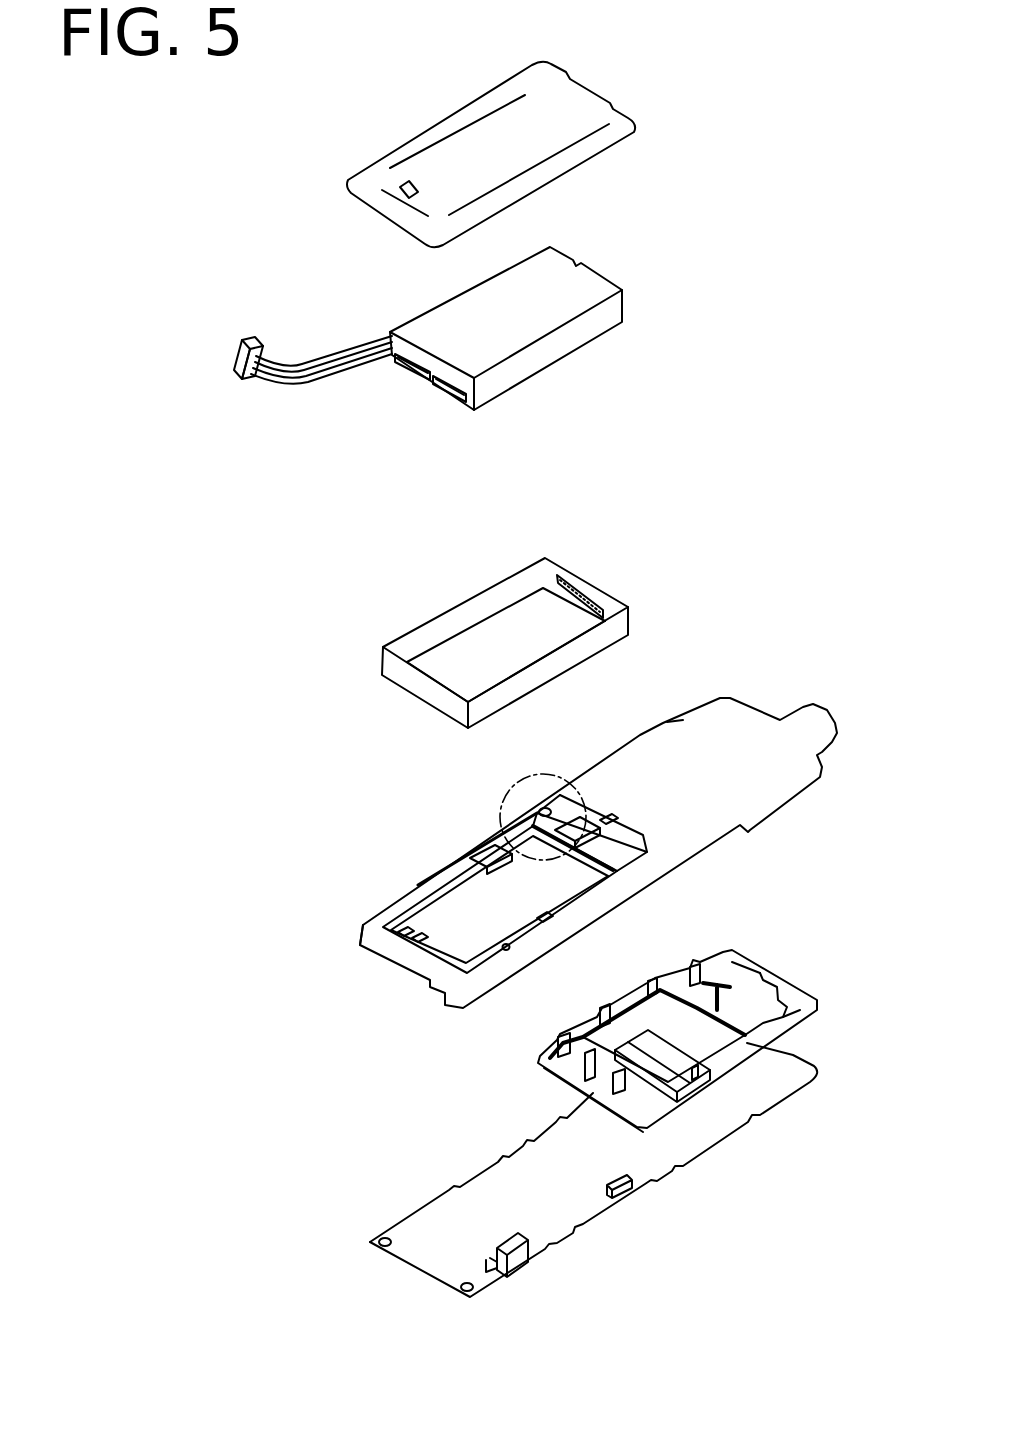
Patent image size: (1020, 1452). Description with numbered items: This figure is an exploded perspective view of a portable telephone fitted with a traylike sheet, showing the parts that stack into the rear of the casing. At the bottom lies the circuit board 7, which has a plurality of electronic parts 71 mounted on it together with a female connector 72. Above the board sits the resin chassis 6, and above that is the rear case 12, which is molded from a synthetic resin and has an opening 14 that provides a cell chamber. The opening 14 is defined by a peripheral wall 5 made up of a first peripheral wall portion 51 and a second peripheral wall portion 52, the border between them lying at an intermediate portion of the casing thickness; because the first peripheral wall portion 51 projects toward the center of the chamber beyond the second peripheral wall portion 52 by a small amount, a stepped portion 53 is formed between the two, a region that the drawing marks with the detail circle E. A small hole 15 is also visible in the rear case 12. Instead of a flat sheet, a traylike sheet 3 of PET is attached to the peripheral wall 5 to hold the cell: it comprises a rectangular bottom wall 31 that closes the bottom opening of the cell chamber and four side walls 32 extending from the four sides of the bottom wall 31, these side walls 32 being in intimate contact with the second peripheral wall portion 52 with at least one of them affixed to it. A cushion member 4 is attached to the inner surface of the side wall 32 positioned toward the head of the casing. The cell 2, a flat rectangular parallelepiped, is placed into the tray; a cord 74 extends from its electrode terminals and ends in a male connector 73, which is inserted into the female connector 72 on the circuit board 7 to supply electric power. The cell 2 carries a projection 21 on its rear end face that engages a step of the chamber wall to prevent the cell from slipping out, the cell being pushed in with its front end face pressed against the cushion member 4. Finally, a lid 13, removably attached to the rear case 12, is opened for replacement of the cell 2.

The lid 13 is at (453, 120).
The cell 2 is at (506, 351).
The projection 21 is at (450, 393).
The cord 74 is at (337, 363).
The male connector 73 is at (238, 378).
The traylike sheet 3 is at (531, 621).
The bottom wall 31 is at (522, 610).
The side walls 32 is at (613, 607).
The cushion member 4 is at (580, 590).
The rear case 12 is at (584, 839).
The opening 14 is at (437, 937).
The hole 15 is at (508, 951).
The peripheral wall 5 is at (476, 836).
The first peripheral wall portion 51 is at (470, 857).
The second peripheral wall portion 52 is at (490, 837).
The stepped portion 53 is at (580, 812).
The detail portion E is at (497, 794).
The resin chassis 6 is at (792, 1000).
The circuit board 7 is at (600, 1184).
The electronic parts 71 is at (623, 1190).
The female connector 72 is at (520, 1257).